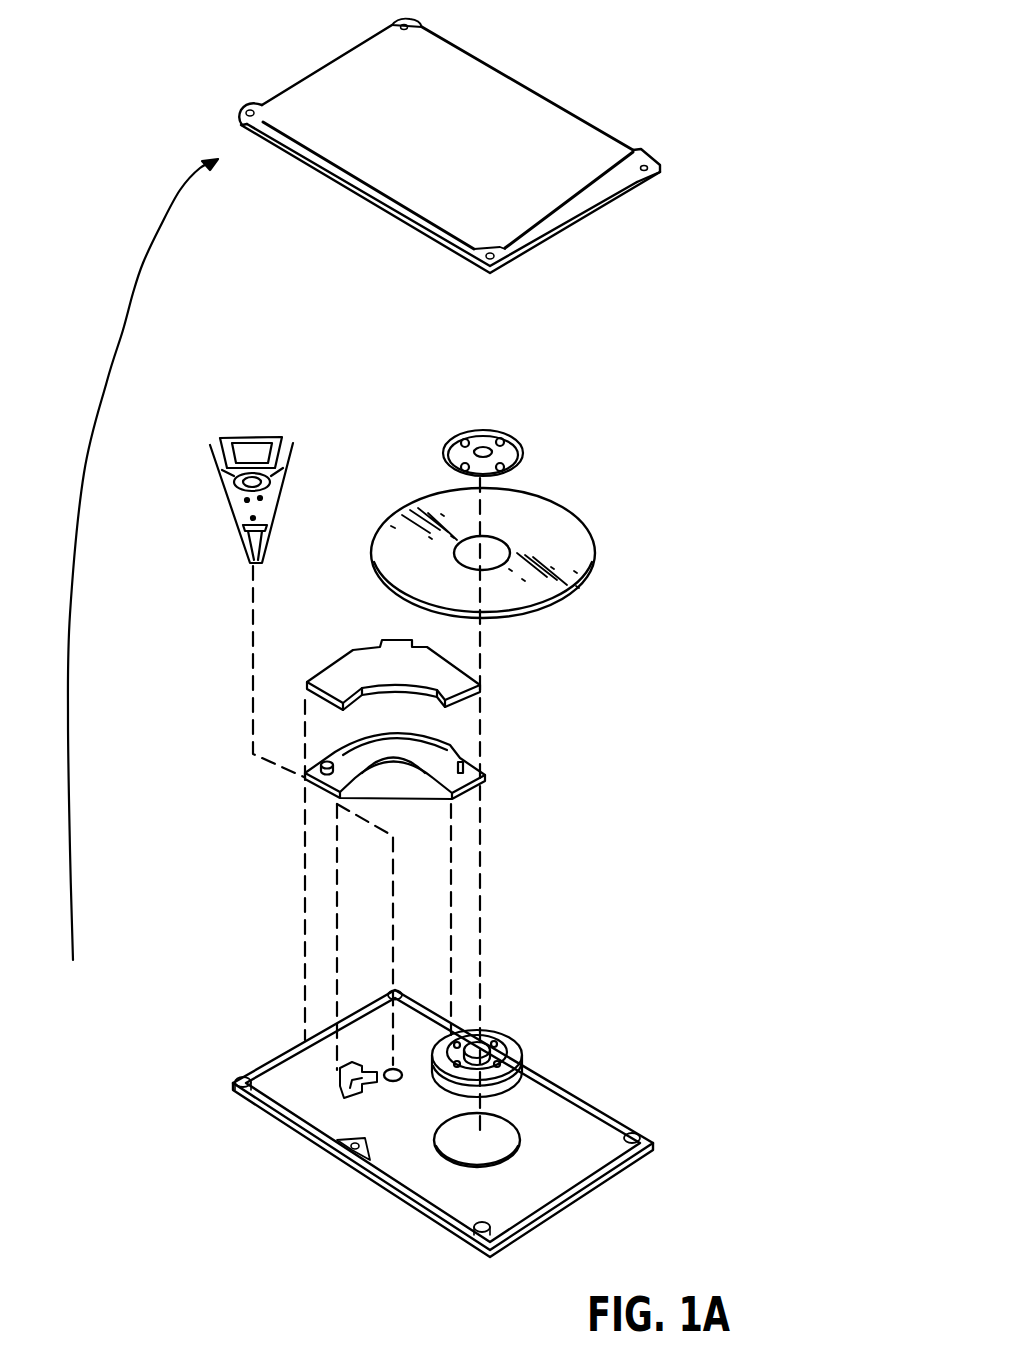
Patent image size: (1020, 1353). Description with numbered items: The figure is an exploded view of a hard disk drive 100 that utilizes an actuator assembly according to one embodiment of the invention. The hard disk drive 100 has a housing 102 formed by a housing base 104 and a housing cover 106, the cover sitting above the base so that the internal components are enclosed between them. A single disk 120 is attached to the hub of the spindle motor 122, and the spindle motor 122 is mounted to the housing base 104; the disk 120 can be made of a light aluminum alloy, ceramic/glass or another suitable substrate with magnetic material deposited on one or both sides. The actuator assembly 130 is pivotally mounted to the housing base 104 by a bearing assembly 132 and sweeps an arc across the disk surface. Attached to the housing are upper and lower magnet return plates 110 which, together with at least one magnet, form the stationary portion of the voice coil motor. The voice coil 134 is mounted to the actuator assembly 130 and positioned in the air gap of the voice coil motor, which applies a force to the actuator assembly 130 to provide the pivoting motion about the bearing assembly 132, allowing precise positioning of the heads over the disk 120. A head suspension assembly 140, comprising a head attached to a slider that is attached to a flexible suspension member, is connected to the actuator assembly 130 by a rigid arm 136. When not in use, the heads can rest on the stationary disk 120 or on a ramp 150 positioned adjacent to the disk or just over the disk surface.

The hard disk drive 100 is at (723, 493).
The housing 102 is at (216, 1075).
The housing base 104 is at (297, 1097).
The housing cover 106 is at (573, 138).
The upper and lower magnet return plates 110 is at (415, 752).
The disk 120 is at (570, 549).
The spindle motor 122 is at (512, 1053).
The actuator assembly 130 is at (256, 485).
The bearing assembly 132 is at (240, 470).
The voice coil 134 is at (238, 446).
The rigid arm 136 is at (265, 505).
The head suspension assembly 140 is at (267, 527).
The ramp 150 is at (348, 1073).